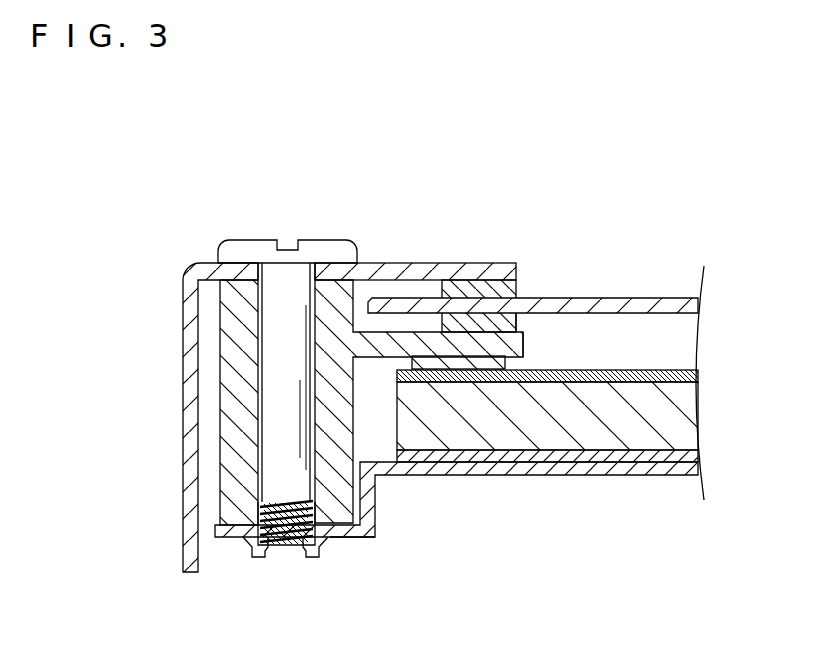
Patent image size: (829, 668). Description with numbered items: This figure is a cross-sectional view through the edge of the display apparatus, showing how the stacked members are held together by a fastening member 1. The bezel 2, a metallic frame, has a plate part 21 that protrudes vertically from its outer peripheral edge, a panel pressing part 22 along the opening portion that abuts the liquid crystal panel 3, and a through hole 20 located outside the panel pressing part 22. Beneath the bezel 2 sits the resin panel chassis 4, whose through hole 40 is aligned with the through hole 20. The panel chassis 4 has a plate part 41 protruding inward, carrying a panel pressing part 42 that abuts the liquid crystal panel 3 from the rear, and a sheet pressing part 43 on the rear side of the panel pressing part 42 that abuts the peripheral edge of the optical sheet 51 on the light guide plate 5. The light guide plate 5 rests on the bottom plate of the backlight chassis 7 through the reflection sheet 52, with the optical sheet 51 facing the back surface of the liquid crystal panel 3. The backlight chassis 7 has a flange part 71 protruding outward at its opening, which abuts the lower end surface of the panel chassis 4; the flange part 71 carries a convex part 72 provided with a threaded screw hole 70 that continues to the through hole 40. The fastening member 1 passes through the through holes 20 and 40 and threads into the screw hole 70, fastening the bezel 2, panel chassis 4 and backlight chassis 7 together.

The fastening member 1 is at (270, 247).
The bezel 2 is at (413, 267).
The liquid crystal panel 3 is at (657, 298).
The panel chassis 4 is at (228, 347).
The light guide plate 5 is at (690, 412).
The backlight chassis 7 is at (538, 476).
The through hole 20 is at (307, 268).
The plate part 21 is at (185, 387).
The panel pressing part 22 is at (490, 289).
The through hole 40 is at (271, 283).
The plate part 41 is at (523, 343).
The panel pressing part 42 is at (503, 323).
The sheet pressing part 43 is at (503, 362).
The optical sheet 51 is at (697, 375).
The reflection sheet 52 is at (695, 455).
The screw hole 70 is at (297, 548).
The flange part 71 is at (350, 538).
The convex part 72 is at (250, 546).